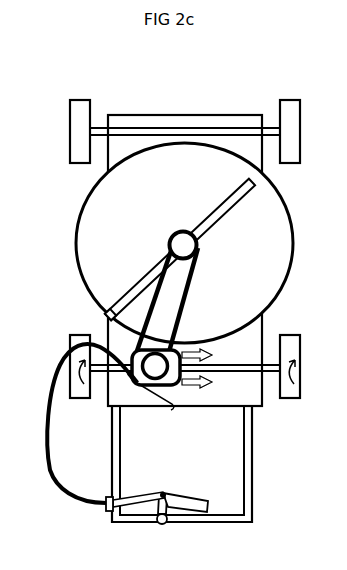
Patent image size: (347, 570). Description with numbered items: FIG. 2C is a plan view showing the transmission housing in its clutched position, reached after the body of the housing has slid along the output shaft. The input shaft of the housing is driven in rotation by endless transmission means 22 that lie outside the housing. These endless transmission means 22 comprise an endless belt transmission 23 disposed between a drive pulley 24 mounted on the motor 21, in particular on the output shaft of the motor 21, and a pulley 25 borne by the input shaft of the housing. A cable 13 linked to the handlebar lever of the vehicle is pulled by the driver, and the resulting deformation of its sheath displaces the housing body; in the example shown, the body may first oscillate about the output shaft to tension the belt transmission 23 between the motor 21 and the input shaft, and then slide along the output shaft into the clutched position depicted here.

The cable 13 is at (67, 490).
The motor 21 is at (170, 240).
The endless transmission means 22 is at (138, 319).
The endless belt transmission 23 is at (193, 288).
The drive pulley 24 is at (202, 248).
The pulley 25 is at (178, 365).